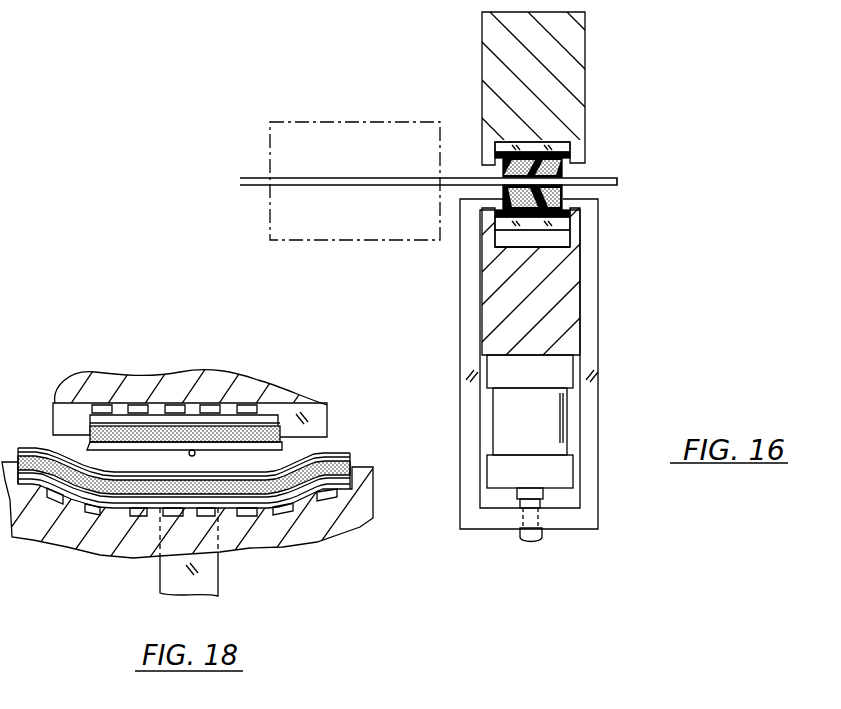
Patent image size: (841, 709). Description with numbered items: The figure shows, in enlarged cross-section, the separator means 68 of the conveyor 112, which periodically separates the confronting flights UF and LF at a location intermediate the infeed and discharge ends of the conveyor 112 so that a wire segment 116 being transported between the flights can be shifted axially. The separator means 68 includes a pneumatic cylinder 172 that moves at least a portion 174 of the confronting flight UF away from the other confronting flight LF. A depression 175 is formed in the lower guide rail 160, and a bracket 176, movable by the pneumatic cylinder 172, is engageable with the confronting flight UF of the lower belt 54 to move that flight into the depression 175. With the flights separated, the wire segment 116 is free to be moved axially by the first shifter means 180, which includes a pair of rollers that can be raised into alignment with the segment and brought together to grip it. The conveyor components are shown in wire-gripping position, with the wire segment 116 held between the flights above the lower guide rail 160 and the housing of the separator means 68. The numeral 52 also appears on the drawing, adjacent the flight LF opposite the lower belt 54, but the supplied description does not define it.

In FIG. 16, the conveyor 112 is at (588, 52).
In FIG. 16, the lower flight LF is at (572, 146).
In FIG. 18, the lower flight LF is at (280, 415).
In FIG. 16, the upper seal member 52 is at (582, 153).
In FIG. 18, the upper seal member 52 is at (227, 410).
In FIG. 16, the wire segment 116 is at (267, 182).
In FIG. 18, the wire segment 116 is at (192, 450).
In FIG. 16, the first shifter means 180 is at (310, 116).
In FIG. 16, the lower belt 54 is at (584, 213).
In FIG. 18, the lower belt 54 is at (340, 452).
In FIG. 16, the depression 175 is at (598, 240).
In FIG. 18, the depression 175 is at (110, 510).
In FIG. 16, the upper flight UF is at (503, 225).
In FIG. 18, the upper flight UF is at (77, 500).
In FIG. 16, the lower guide rail 160 is at (575, 280).
In FIG. 18, the lower guide rail 160 is at (125, 372).
In FIG. 16, the bracket 176 is at (598, 306).
In FIG. 18, the bracket 176 is at (220, 577).
In FIG. 16, the pneumatic cylinder 172 is at (555, 422).
In FIG. 16, the separator means 68 is at (625, 343).
In FIG. 18, the portion of confronting flight 174 is at (268, 512).